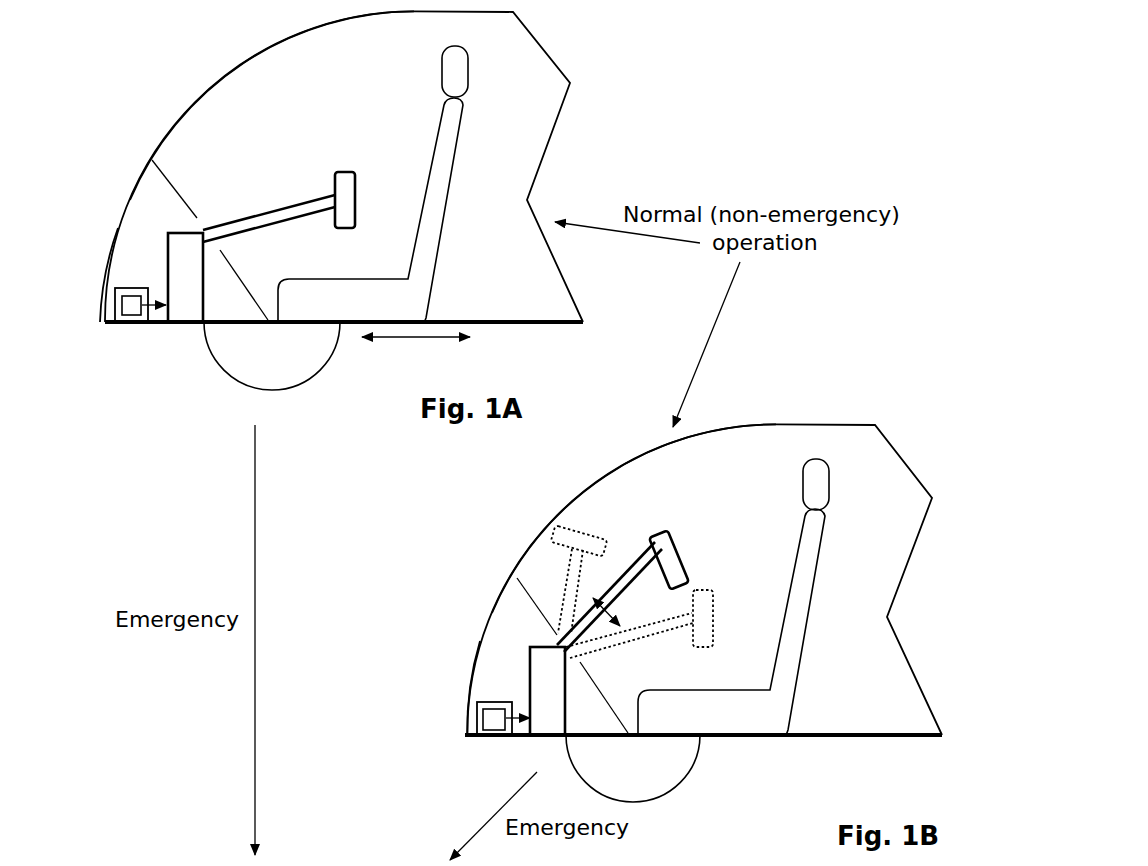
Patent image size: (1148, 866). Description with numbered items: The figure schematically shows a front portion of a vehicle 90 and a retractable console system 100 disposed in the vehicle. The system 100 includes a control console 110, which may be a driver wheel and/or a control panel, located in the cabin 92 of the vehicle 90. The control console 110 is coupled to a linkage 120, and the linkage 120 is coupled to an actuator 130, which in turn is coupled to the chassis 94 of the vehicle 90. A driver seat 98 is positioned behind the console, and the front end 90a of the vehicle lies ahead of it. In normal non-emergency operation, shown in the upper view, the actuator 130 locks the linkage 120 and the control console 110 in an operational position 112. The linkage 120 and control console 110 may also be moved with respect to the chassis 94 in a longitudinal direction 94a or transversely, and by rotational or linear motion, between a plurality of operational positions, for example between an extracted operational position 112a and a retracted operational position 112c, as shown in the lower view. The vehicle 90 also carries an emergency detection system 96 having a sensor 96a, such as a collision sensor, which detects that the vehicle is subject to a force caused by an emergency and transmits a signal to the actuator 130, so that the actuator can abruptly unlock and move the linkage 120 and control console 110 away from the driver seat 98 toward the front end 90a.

In FIG. 1A, the vehicle 90 is at (567, 50).
In FIG. 1B, the vehicle 90 is at (930, 463).
In FIG. 1A, the front end 90a is at (105, 321).
In FIG. 1B, the front end 90a is at (465, 735).
In FIG. 1A, the cabin 92 is at (250, 85).
In FIG. 1B, the cabin 92 is at (583, 517).
In FIG. 1A, the chassis 94 is at (465, 318).
In FIG. 1B, the chassis 94 is at (828, 733).
In FIG. 1A, the longitudinal direction 94a is at (436, 345).
In FIG. 1A, the emergency detection system 96 is at (138, 290).
In FIG. 1B, the emergency detection system 96 is at (499, 704).
In FIG. 1A, the sensor 96a is at (128, 315).
In FIG. 1B, the sensor 96a is at (490, 729).
In FIG. 1A, the driver seat 98 is at (438, 178).
In FIG. 1B, the driver seat 98 is at (800, 592).
In FIG. 1A, the retractable console system 100 is at (258, 240).
In FIG. 1B, the retractable console system 100 is at (606, 662).
In FIG. 1A, the control console 110 is at (345, 180).
In FIG. 1B, the control console 110 is at (670, 556).
In FIG. 1A, the operational position 112 is at (323, 182).
In FIG. 1B, the operational position 112 is at (655, 527).
In FIG. 1B, the extracted operational position 112a is at (717, 611).
In FIG. 1B, the retracted operational position 112c is at (558, 572).
In FIG. 1A, the linkage 120 is at (245, 228).
In FIG. 1B, the linkage 120 is at (625, 597).
In FIG. 1A, the actuator 130 is at (178, 260).
In FIG. 1B, the actuator 130 is at (542, 673).